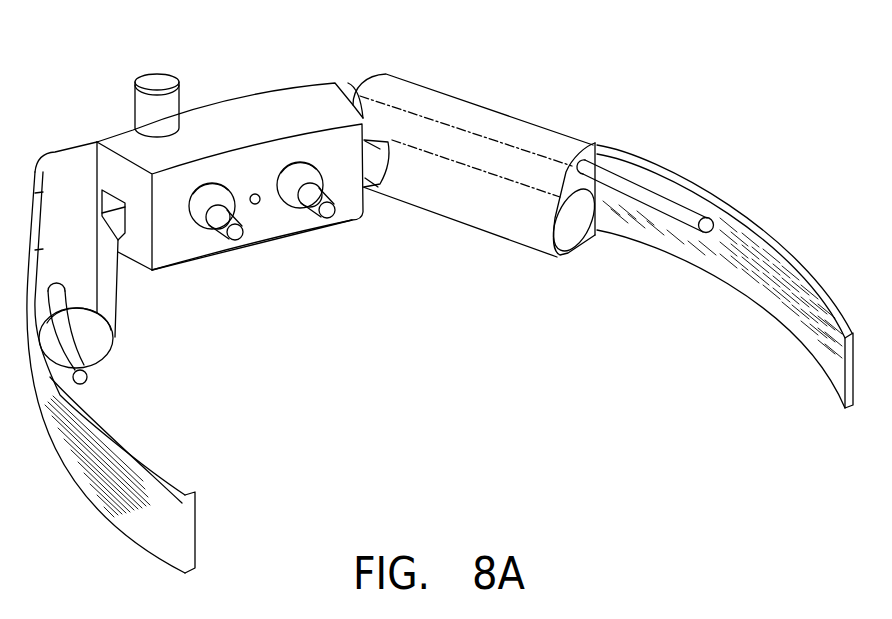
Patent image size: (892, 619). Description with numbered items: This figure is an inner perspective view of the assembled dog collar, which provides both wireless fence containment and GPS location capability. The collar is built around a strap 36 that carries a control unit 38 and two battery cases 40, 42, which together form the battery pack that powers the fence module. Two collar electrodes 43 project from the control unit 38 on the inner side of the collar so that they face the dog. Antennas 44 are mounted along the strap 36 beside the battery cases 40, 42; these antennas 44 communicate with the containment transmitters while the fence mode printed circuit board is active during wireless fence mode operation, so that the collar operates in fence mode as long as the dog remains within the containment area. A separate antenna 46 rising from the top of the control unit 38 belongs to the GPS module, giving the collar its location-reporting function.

The strap 36 is at (133, 452).
The control unit 38 is at (258, 100).
The battery case 40 is at (480, 229).
The battery case 42 is at (120, 298).
The collar electrodes 43 is at (327, 220).
The antennas 44 is at (648, 195).
The antenna 46 is at (179, 77).